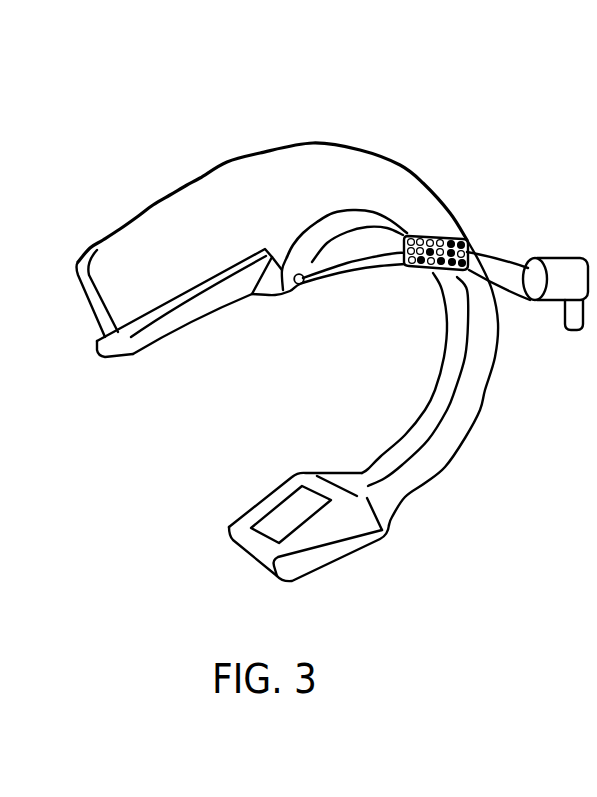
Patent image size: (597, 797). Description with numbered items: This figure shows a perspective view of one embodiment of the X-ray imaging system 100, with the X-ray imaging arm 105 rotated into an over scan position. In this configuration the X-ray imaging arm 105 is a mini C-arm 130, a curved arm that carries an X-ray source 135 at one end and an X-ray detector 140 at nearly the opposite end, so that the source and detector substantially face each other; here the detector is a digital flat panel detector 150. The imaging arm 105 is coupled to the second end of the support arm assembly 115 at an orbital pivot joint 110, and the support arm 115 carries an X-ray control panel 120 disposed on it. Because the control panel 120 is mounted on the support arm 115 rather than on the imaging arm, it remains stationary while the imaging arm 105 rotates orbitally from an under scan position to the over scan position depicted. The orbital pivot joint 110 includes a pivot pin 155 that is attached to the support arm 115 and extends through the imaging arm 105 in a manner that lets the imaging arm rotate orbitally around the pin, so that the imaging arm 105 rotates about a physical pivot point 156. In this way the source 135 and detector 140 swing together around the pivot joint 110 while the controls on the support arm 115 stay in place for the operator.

The X-ray imaging system 100 is at (484, 96).
The X-ray imaging arm 105 is at (155, 250).
The orbital pivot joint 110 is at (284, 267).
The support arm assembly 115 is at (500, 273).
The X-ray control panel 120 is at (440, 237).
The mini C-arm 130 is at (366, 139).
The X-ray source 135 is at (186, 338).
The X-ray detector 140 is at (257, 535).
The digital flat panel detector 150 is at (282, 514).
The pivot pin 155 is at (306, 279).
The physical pivot point 156 is at (307, 296).